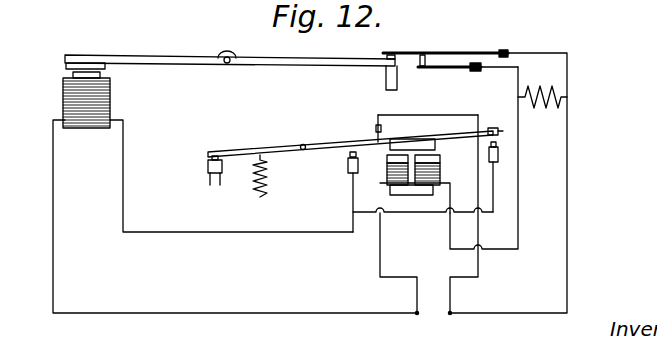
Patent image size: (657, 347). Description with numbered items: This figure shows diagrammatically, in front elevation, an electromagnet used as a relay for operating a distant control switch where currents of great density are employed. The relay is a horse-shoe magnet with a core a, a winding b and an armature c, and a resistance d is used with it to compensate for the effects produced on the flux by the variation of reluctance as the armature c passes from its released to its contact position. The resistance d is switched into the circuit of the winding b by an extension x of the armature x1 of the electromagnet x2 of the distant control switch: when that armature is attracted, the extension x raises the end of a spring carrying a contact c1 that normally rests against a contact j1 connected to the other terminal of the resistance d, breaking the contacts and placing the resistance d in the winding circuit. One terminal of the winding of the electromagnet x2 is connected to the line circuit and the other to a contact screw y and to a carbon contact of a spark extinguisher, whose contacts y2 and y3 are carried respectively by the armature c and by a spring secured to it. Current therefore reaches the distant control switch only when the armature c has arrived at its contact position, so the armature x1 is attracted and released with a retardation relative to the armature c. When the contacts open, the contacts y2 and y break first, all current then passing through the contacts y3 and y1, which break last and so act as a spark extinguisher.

The extension of the armature x is at (251, 63).
The armature of the electromagnet of the distant control switch x1 is at (97, 65).
The electromagnet of the distant control switch x2 is at (76, 99).
The contact screw y is at (350, 161).
The contact y1 is at (495, 161).
The contact carried by the armature y2 is at (338, 143).
The contact carried by the spring y3 is at (498, 133).
The core a is at (400, 162).
The winding b is at (420, 183).
The armature c is at (464, 52).
The contact c1 is at (423, 55).
The resistance d is at (546, 85).
The contact j1 is at (418, 69).